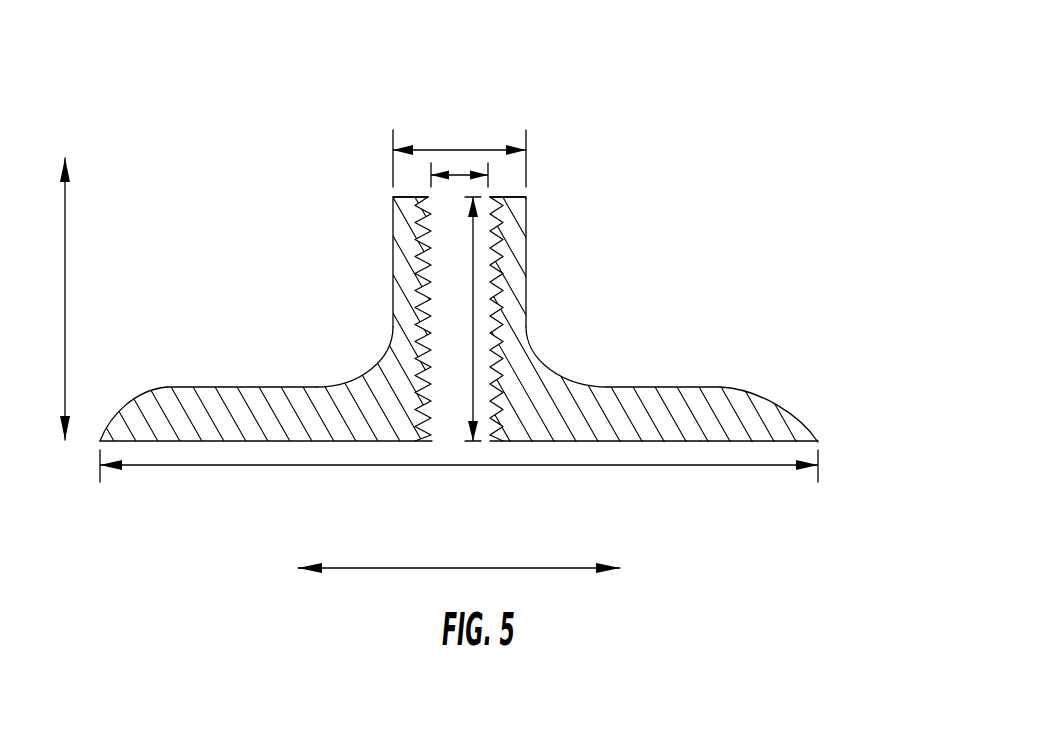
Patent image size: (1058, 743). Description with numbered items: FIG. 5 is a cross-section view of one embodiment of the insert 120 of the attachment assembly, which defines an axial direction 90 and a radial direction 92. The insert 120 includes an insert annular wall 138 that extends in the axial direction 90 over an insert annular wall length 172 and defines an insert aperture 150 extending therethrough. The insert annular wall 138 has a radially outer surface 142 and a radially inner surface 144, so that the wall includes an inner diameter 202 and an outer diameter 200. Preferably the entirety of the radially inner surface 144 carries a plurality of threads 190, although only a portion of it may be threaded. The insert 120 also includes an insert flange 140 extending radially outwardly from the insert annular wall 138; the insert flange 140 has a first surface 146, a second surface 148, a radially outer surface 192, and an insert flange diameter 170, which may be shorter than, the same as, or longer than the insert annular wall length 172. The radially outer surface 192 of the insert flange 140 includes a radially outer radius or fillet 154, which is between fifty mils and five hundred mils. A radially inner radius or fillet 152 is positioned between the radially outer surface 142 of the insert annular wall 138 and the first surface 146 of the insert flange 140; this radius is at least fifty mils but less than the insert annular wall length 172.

The insert 120 is at (235, 80).
The insert annular wall 138 is at (393, 277).
The insert flange 140 is at (672, 400).
The radially outer surface 142 is at (380, 355).
The radially inner surface 144 is at (430, 345).
The first surface 146 is at (255, 387).
The second surface 148 is at (258, 443).
The insert aperture 150 is at (453, 248).
The radially inner radius 152 is at (547, 363).
The radially outer radius 154 is at (773, 397).
The insert flange diameter 170 is at (712, 467).
The insert annular wall length 172 is at (474, 282).
The plurality of threads 190 is at (428, 345).
The radially outer surface 192 is at (820, 436).
The outer diameter 200 is at (485, 147).
The inner diameter 202 is at (457, 175).
The axial direction 90 is at (65, 293).
The radial direction 92 is at (540, 568).